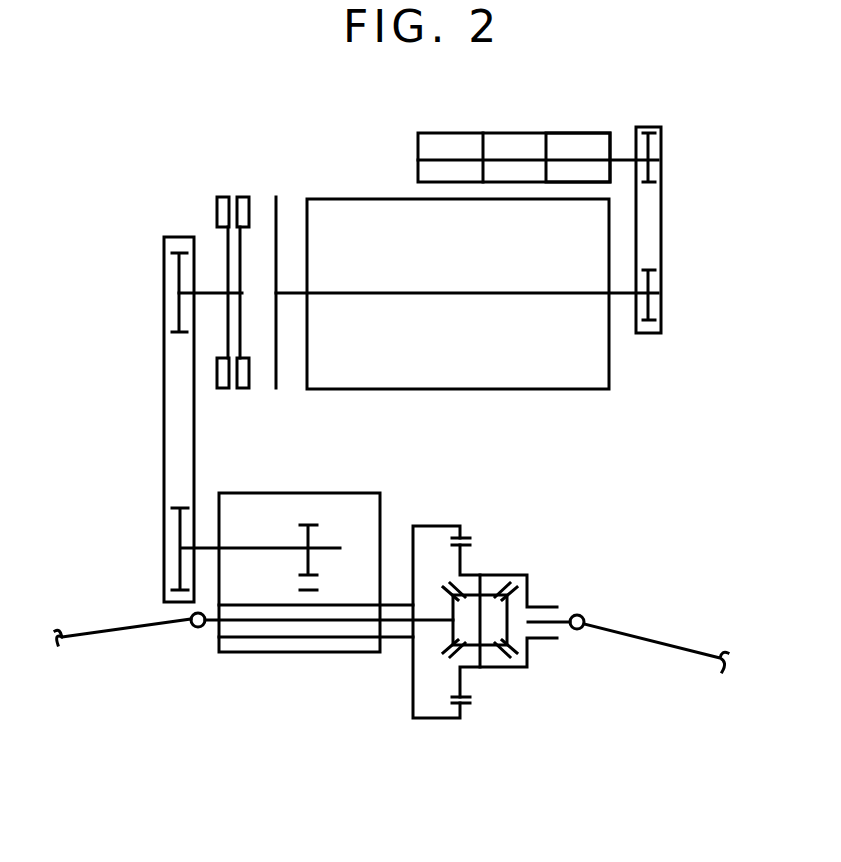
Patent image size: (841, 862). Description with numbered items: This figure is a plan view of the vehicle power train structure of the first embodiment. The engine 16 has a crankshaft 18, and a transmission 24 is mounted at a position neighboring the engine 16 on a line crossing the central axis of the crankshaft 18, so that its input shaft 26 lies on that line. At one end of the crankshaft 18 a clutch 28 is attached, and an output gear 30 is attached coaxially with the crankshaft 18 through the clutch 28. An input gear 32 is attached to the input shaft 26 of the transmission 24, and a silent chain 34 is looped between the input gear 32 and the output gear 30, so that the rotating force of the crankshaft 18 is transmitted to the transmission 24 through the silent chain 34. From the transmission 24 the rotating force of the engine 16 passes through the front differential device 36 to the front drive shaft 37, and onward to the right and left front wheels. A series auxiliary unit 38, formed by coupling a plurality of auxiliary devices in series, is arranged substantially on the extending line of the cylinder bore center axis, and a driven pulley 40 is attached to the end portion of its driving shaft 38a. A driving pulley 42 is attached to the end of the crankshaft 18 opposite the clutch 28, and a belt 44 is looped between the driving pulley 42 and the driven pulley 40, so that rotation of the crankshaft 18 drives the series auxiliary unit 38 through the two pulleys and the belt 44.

The engine 16 is at (540, 375).
The crankshaft 18 is at (437, 295).
The transmission 24 is at (328, 483).
The input shaft 26 is at (248, 548).
The clutch 28 is at (261, 196).
The output gear 30 is at (180, 267).
The input gear 32 is at (178, 532).
The silent chain 34 is at (164, 402).
The front differential device 36 is at (493, 682).
The front drive shaft 37 is at (277, 623).
The series auxiliary unit 38 is at (504, 126).
The driving shaft 38a is at (567, 160).
The driven pulley 40 is at (655, 145).
The driving pulley 42 is at (655, 282).
The belt 44 is at (662, 237).